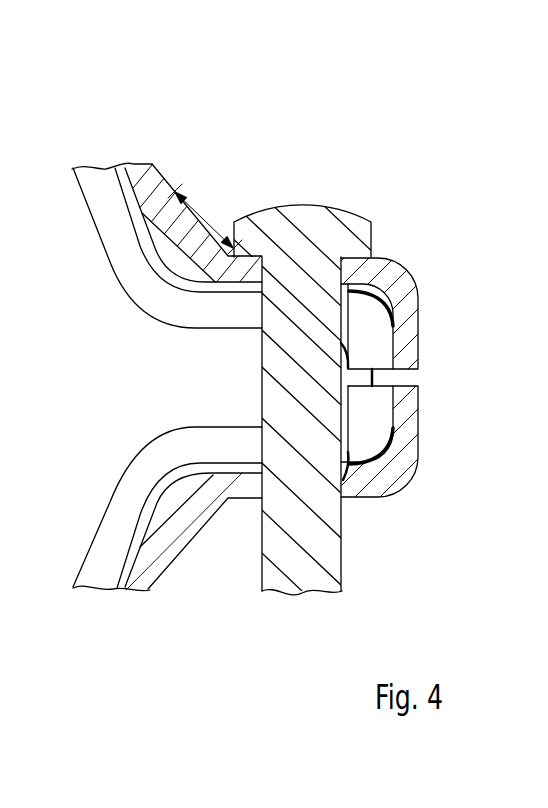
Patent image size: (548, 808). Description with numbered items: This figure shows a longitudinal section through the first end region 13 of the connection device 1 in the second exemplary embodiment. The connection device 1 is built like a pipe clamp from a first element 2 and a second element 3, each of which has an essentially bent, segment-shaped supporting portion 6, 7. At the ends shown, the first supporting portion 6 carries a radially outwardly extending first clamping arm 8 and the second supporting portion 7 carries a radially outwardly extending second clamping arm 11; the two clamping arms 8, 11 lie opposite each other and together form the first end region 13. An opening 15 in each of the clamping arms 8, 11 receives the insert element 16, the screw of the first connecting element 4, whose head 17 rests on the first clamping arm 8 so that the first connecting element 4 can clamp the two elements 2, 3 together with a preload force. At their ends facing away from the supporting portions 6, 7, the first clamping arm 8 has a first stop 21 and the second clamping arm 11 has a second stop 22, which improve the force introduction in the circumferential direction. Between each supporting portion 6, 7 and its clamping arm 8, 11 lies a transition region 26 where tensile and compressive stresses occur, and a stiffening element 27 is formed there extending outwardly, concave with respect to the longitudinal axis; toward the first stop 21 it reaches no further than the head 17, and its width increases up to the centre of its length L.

The connection device 1 is at (428, 157).
The first element 2 is at (167, 192).
The first supporting portion 6 is at (105, 169).
The second element 3 is at (167, 566).
The second supporting portion 7 is at (113, 589).
The first connecting element 4 is at (359, 186).
The first clamping arm 8 is at (380, 273).
The second clamping arm 11 is at (373, 483).
The first end region 13 is at (303, 143).
The opening 15 is at (264, 272).
The insert element 16 is at (263, 375).
The head 17 is at (343, 141).
The first stop 21 is at (410, 343).
The second stop 22 is at (410, 418).
The transition region 26 is at (130, 327).
The stiffening element 27 is at (178, 233).
The length L is at (212, 213).